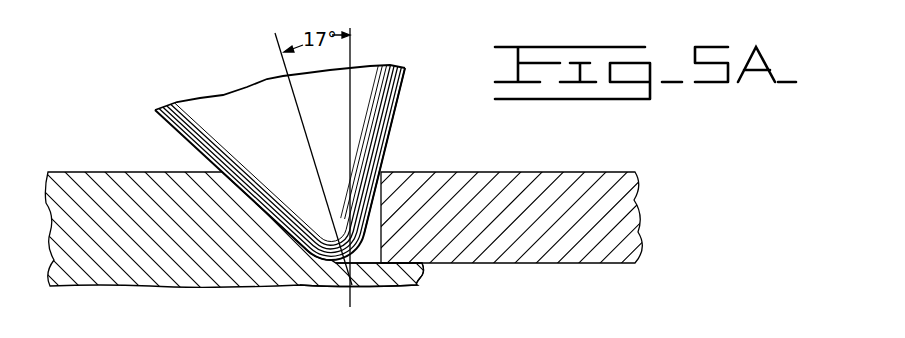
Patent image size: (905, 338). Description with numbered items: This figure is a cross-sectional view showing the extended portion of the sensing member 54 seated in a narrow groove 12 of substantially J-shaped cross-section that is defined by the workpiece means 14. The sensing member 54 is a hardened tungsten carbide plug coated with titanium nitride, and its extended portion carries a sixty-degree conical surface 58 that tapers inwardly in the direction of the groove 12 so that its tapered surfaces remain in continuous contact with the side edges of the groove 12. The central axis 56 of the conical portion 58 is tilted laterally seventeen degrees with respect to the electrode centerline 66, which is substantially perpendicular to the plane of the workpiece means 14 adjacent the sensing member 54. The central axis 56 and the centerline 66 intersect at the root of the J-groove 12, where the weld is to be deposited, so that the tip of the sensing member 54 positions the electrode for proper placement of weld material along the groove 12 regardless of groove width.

The groove 12 is at (287, 228).
The workpiece means 14 is at (413, 265).
The sensing member 54 is at (178, 133).
The central axis 56 is at (284, 58).
The conical surface 58 is at (395, 126).
The electrode centerline 66 is at (352, 55).